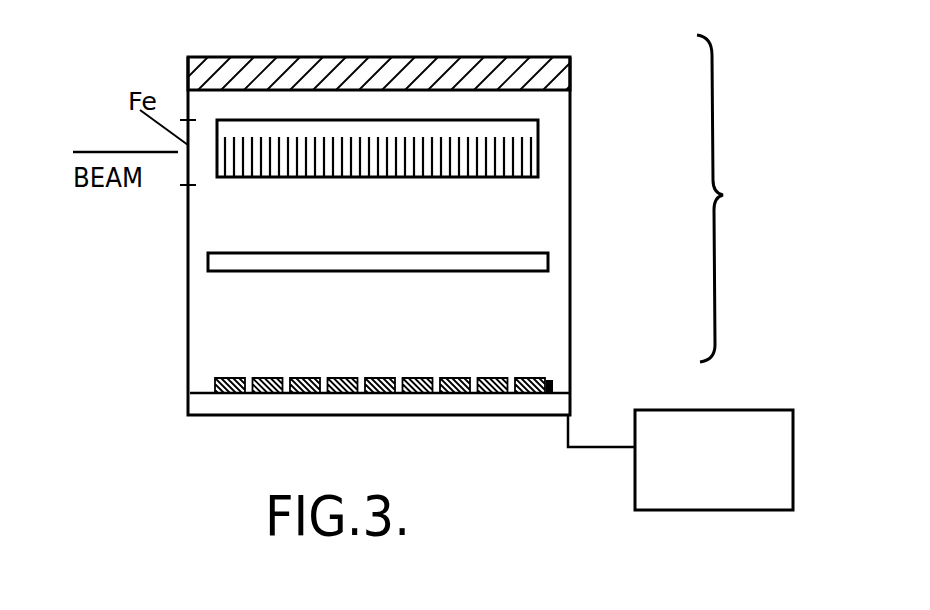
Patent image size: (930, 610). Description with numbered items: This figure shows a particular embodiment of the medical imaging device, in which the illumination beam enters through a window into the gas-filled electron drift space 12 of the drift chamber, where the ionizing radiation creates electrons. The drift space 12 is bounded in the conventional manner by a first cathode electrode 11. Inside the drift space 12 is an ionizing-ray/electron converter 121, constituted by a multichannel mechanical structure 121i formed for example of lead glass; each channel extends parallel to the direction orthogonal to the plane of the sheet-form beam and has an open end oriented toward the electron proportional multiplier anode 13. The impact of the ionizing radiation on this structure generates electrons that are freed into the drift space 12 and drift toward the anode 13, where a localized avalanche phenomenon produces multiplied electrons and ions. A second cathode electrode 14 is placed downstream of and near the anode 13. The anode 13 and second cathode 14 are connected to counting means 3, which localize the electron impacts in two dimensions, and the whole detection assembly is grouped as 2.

The ion detection assembly 2 is at (723, 198).
The counting means 3 is at (728, 410).
The first cathode electrode 11 is at (515, 80).
The electron drift space 12 is at (548, 108).
The electron proportional multiplier anode 13 is at (530, 262).
The second cathode electrode 14 is at (553, 378).
The ionizing-ray/electron converter 121 is at (429, 167).
The multichannel mechanical structure 121i is at (477, 163).